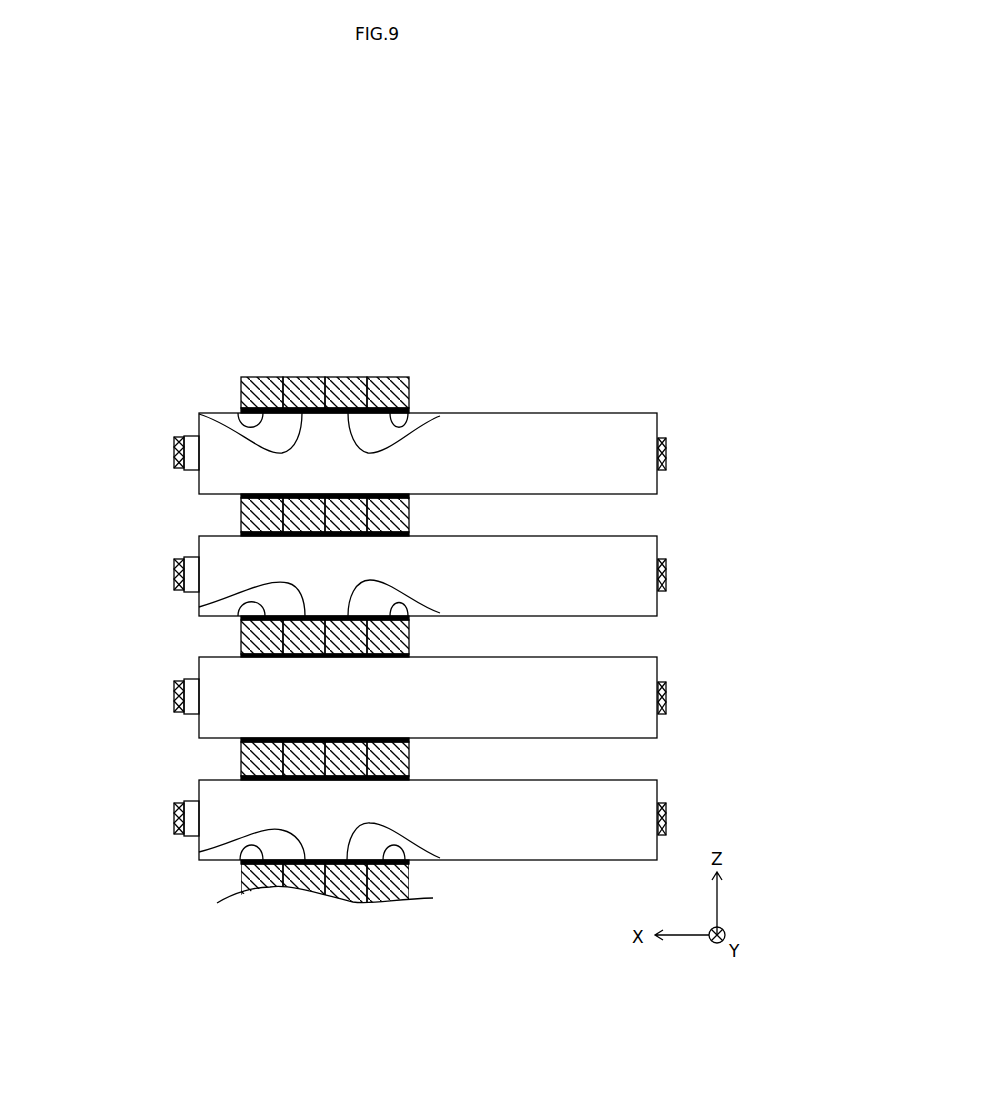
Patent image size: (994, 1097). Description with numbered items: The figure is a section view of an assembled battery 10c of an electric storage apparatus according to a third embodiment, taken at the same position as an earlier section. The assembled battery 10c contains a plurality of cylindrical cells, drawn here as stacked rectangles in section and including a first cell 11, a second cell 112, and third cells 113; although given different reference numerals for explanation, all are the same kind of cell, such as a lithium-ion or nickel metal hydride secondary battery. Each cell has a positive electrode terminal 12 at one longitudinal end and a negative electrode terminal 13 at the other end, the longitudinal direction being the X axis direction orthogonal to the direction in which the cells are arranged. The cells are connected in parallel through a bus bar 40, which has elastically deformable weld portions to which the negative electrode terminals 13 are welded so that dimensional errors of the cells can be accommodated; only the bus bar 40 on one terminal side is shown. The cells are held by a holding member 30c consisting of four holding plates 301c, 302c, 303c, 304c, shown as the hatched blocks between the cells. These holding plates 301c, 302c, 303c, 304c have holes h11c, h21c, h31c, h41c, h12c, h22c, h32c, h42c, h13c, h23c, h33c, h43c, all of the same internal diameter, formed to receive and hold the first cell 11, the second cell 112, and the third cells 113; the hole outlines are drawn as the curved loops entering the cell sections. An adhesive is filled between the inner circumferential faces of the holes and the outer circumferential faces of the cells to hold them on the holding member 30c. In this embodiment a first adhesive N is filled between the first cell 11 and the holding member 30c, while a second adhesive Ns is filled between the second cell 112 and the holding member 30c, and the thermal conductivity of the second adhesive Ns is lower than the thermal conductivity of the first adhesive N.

The assembled battery 10c is at (530, 252).
The first electromagnetic steel plate 11 is at (547, 413).
The second cell 112 is at (658, 600).
The third cell 113 is at (658, 727).
The positive electrode terminal 12 is at (184, 437).
The negative electrode terminal 13 is at (663, 437).
The bus bar 40 is at (174, 453).
The holding member 30c is at (321, 311).
The holding plate 301c is at (255, 377).
The holding plate 302c is at (300, 377).
The holding plate 303c is at (350, 377).
The holding plate 304c is at (399, 332).
The first adhesive N is at (410, 496).
The second adhesive Ns is at (240, 531).
The hole h11c is at (238, 413).
The hole h21c is at (199, 414).
The hole h31c is at (440, 416).
The hole h41c is at (408, 413).
The hole h12c is at (238, 616).
The hole h22c is at (199, 607).
The hole h32c is at (440, 613).
The hole h42c is at (408, 616).
The hole h13c is at (240, 860).
The hole h23c is at (199, 852).
The hole h33c is at (440, 858).
The hole h43c is at (405, 860).